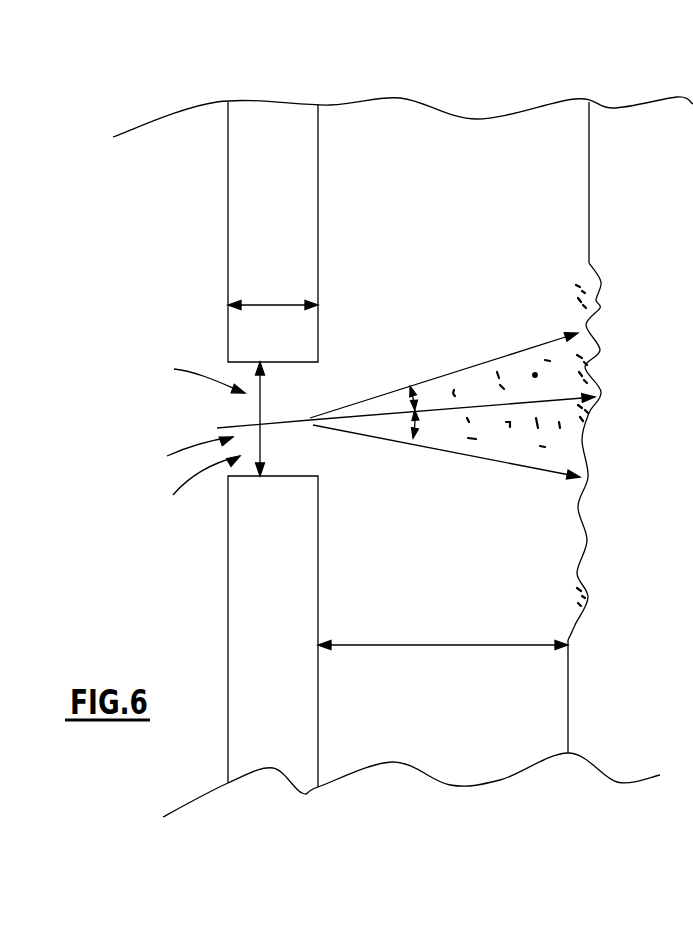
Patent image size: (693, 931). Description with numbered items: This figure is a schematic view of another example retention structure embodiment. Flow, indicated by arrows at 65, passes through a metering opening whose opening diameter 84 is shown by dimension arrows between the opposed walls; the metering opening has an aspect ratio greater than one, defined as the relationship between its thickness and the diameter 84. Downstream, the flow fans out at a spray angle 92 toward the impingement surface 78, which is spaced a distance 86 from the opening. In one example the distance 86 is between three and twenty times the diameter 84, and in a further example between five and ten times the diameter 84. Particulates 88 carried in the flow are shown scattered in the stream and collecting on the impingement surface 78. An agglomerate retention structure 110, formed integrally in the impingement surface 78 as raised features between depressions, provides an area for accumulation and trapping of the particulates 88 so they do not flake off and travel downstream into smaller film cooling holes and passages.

The fluid flow 65 is at (168, 352).
The impingement surface 78 is at (568, 662).
The opening diameter 84 is at (263, 303).
The distance 86 is at (435, 645).
The particulates 88 is at (558, 435).
The spray angle 92 is at (418, 397).
The agglomerate retention structure 110 is at (577, 538).